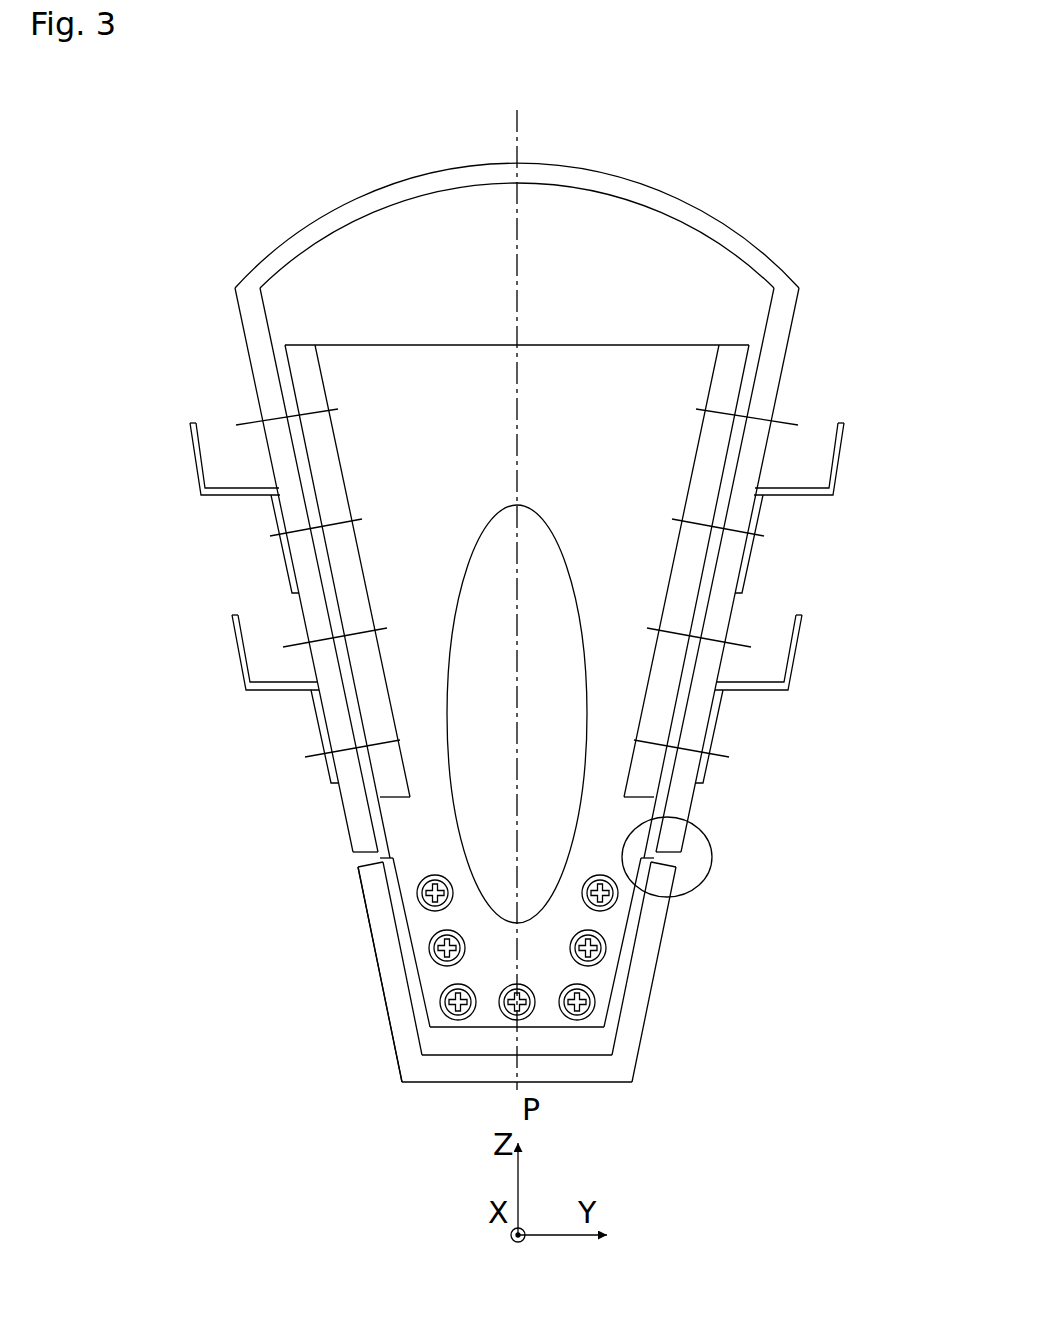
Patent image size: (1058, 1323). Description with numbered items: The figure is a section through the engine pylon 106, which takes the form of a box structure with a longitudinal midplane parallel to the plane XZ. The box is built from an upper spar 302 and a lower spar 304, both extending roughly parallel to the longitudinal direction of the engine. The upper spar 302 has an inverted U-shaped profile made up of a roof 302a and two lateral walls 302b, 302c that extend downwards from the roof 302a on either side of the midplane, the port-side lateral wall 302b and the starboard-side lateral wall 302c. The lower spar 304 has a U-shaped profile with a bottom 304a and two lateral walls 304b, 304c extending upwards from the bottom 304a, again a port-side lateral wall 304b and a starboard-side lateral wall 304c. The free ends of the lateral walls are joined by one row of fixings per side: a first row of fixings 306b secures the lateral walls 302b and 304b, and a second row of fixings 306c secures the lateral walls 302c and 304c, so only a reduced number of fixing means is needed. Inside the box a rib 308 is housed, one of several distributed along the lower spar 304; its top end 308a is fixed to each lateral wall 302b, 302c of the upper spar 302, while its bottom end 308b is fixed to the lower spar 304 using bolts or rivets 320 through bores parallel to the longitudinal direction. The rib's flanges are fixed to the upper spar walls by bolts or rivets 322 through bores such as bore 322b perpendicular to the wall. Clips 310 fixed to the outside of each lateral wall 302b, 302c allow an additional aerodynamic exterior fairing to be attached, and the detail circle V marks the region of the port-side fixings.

The engine pylon 106 is at (226, 232).
The upper spar 302 is at (186, 320).
The roof 302a is at (690, 215).
The port-side lateral wall 302b is at (780, 330).
The starboard-side lateral wall 302c is at (258, 366).
The lower spar 304 is at (328, 1047).
The bottom 304a is at (436, 1073).
The port-side lateral wall 304b is at (638, 1000).
The starboard-side lateral wall 304c is at (392, 982).
The first row of fixings 306b is at (670, 858).
The second row of fixings 306c is at (360, 856).
The rib 308 is at (480, 450).
The top end 308a is at (158, 475).
The bottom end 308b is at (212, 930).
The clips 310 is at (802, 490).
The bolts or rivets 320 is at (587, 1007).
The bolts or rivets 322 is at (275, 537).
The bore 322b is at (338, 748).
The detail view region V is at (703, 835).